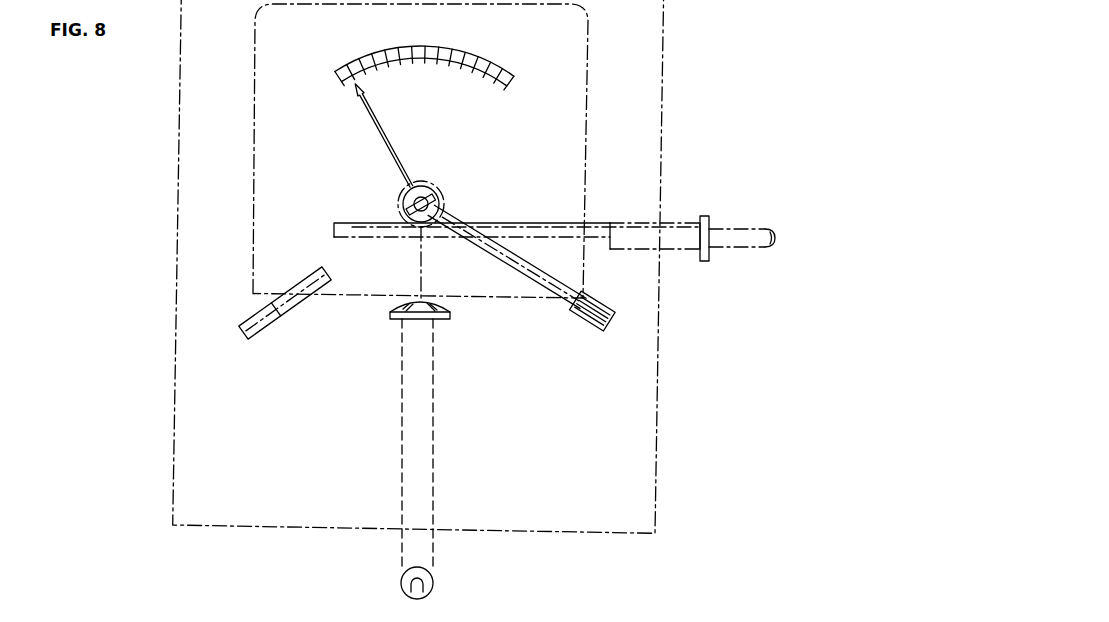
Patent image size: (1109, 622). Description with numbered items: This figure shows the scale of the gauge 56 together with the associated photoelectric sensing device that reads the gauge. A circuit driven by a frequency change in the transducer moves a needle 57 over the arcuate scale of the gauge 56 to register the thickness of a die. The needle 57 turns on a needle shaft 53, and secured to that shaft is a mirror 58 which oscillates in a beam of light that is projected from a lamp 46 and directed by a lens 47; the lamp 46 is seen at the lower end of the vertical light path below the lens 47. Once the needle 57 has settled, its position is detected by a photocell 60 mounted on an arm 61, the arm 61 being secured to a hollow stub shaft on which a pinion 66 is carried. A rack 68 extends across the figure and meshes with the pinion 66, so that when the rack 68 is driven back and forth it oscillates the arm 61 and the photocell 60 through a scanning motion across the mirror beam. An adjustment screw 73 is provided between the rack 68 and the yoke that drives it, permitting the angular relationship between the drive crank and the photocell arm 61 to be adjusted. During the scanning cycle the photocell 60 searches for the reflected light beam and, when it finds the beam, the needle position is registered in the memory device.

The lamp 46 is at (405, 585).
The lens 47 is at (399, 315).
The needle shaft 53 is at (424, 196).
The gauge 56 is at (650, 78).
The needle 57 is at (379, 120).
The mirror 58 is at (437, 206).
The photocell 60 is at (590, 311).
The arm 61 is at (497, 262).
The pinion 66 is at (441, 189).
The rack 68 is at (362, 222).
The adjustment screw 73 is at (705, 262).